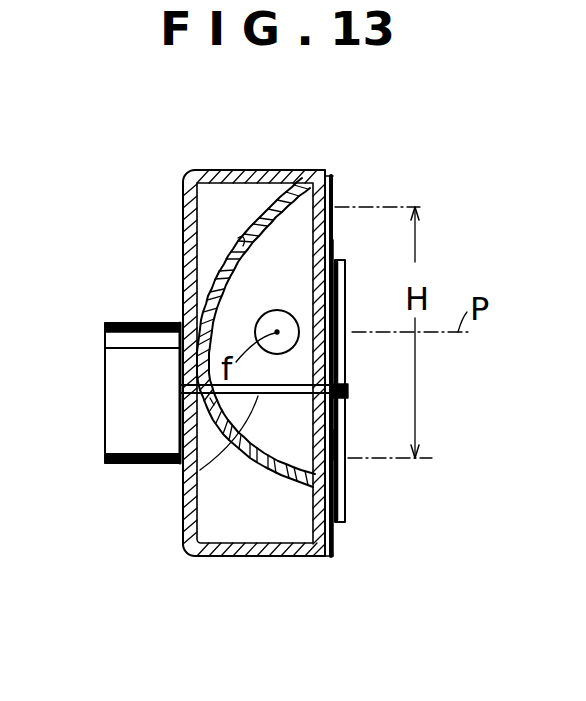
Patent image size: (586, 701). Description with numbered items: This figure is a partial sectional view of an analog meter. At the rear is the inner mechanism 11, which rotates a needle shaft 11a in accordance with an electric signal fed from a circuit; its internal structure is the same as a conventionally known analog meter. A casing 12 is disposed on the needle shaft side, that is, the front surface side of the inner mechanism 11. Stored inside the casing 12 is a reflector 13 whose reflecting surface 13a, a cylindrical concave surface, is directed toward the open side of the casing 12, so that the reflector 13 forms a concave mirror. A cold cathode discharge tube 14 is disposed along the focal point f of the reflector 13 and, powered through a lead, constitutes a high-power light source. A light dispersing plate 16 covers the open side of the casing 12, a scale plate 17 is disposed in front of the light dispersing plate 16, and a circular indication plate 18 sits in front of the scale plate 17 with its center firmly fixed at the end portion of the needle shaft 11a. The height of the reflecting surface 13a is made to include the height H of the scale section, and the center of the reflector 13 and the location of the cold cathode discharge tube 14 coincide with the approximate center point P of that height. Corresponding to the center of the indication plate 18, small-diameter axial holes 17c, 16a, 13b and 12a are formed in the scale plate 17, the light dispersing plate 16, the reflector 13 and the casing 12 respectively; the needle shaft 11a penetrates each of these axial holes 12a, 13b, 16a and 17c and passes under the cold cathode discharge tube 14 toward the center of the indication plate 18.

The inner mechanism 11 is at (137, 330).
The needle shaft 11a is at (200, 470).
The casing 12 is at (245, 172).
The axial hole 12a is at (186, 388).
The reflector 13 is at (296, 186).
The reflecting surface 13a is at (242, 242).
The axial hole 13b is at (210, 400).
The cold cathode discharge tube 14 is at (279, 332).
The light dispersing plate 16 is at (333, 190).
The axial hole 16a is at (338, 436).
The scale plate 17 is at (333, 240).
The axial hole 17c is at (336, 410).
The indication plate 18 is at (345, 290).